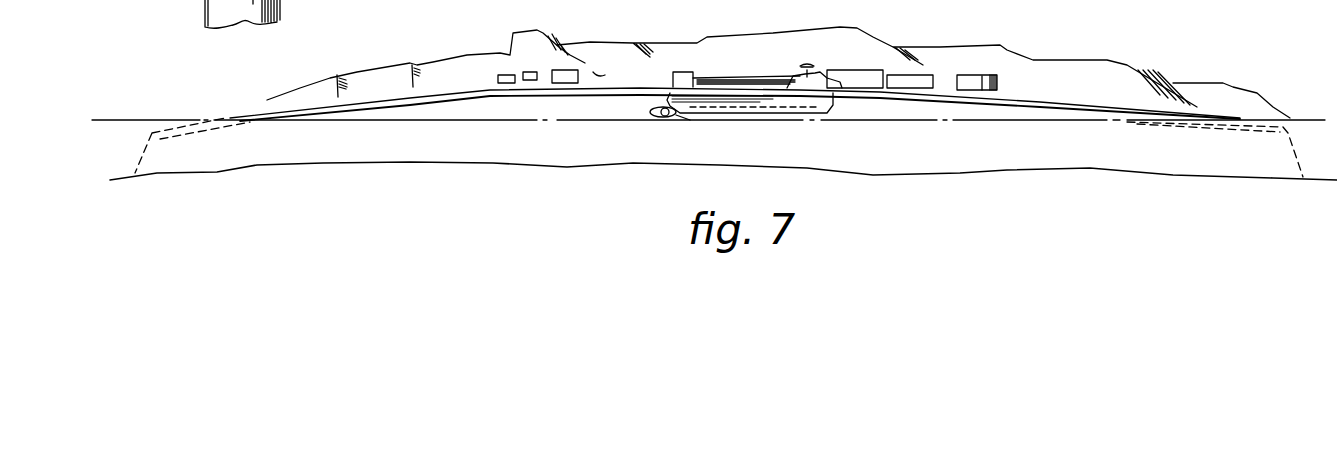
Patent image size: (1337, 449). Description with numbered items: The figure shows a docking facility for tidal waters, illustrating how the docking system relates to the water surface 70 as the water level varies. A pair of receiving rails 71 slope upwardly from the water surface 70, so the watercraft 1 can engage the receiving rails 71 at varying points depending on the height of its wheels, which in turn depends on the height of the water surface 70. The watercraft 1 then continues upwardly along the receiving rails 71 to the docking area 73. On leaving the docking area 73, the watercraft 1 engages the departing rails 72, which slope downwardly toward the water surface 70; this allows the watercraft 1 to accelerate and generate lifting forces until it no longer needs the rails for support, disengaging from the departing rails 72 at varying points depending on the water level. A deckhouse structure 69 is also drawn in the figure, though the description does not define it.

The watercraft 1 is at (748, 82).
The deckhouse 69 is at (913, 78).
The water surface 70 is at (135, 122).
The receiving rails 71 is at (268, 118).
The departing rails 72 is at (1157, 110).
The docking area 73 is at (607, 90).